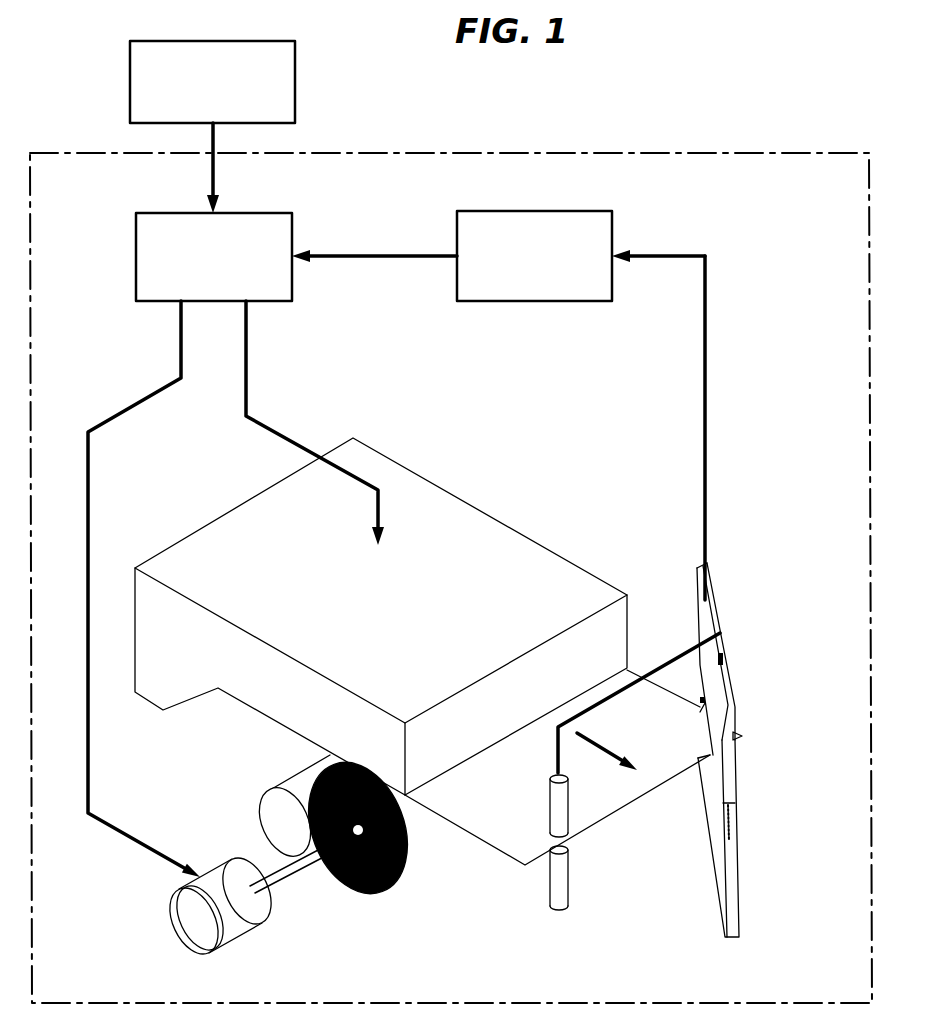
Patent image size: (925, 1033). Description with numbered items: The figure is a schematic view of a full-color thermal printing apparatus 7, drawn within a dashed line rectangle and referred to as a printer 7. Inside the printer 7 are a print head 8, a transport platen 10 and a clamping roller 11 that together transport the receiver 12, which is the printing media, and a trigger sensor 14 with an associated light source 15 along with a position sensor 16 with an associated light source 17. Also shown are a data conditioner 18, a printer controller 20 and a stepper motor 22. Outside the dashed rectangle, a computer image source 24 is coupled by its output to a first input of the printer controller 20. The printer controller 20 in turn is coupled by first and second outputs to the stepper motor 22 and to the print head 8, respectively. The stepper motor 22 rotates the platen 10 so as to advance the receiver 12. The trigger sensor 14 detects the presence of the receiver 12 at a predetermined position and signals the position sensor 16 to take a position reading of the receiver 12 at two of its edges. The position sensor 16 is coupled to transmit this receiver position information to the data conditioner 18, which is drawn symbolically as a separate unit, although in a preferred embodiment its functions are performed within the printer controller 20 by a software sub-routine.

The thermal printing apparatus 7 is at (681, 153).
The print head 8 is at (573, 590).
The transport platen 10 is at (433, 850).
The clamping roller 11 is at (267, 808).
The receiver 12 is at (497, 850).
The trigger sensor 14 is at (563, 803).
The light source 15 is at (564, 893).
The position sensor 16 is at (730, 693).
The light source 17 is at (712, 842).
The data conditioner 18 is at (565, 301).
The printer controller 20 is at (292, 224).
The stepper motor 22 is at (177, 912).
The computer image source 24 is at (295, 85).